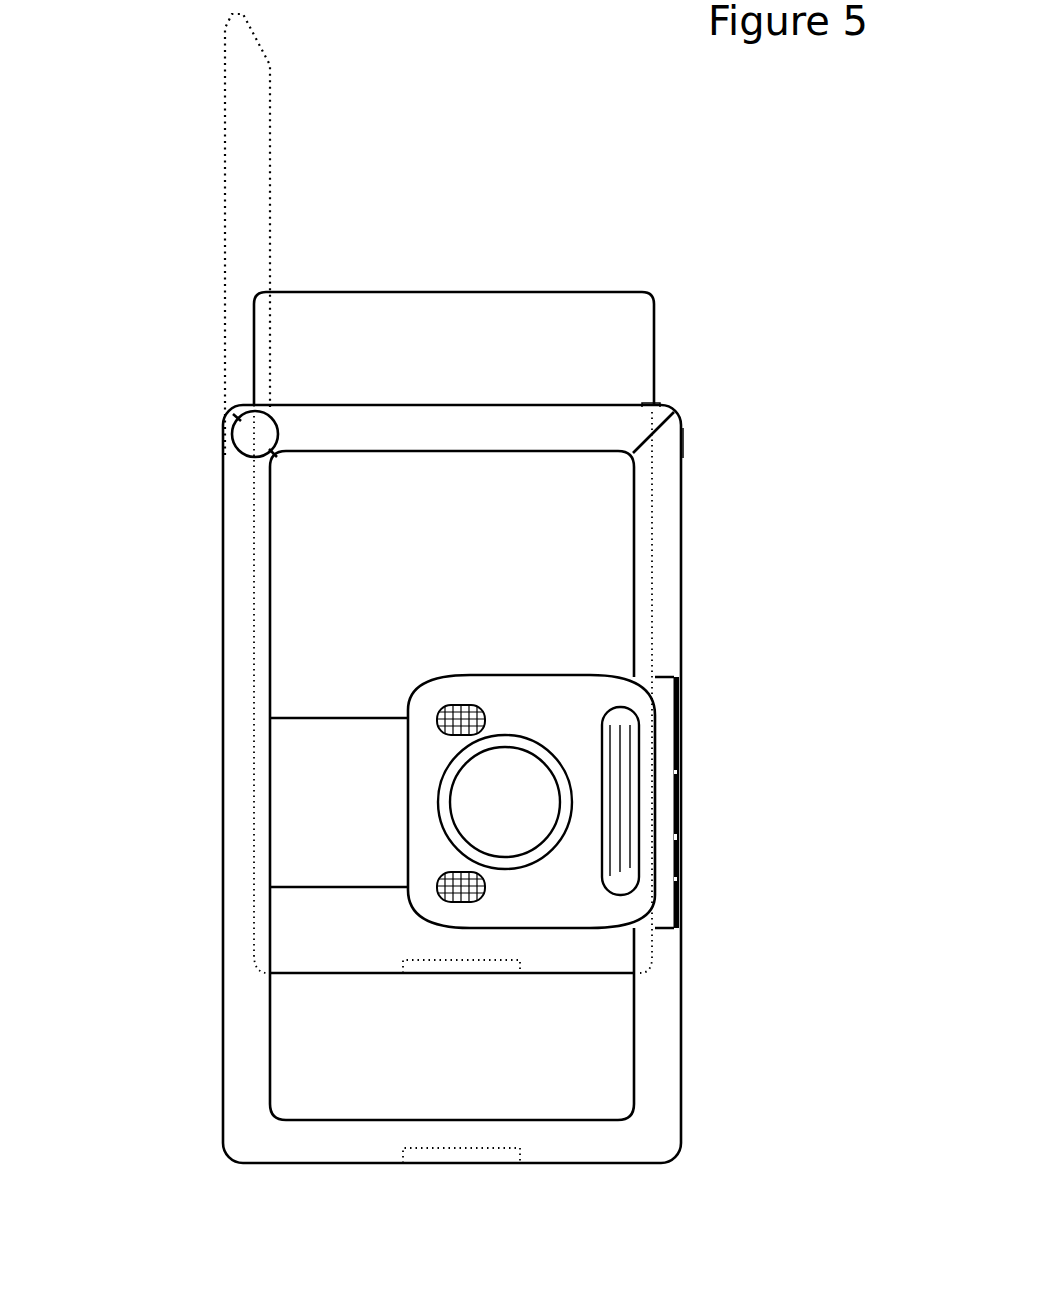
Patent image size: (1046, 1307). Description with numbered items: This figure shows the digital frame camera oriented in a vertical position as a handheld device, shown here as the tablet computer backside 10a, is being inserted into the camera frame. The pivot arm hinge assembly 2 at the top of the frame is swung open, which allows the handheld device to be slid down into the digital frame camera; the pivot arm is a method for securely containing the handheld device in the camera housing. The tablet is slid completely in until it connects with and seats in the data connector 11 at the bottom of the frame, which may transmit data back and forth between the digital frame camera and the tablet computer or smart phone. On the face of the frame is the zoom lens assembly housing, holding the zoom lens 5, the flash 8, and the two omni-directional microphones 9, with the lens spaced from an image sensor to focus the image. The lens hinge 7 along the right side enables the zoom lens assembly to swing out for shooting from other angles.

The pivot arm hinge assembly 2 is at (160, 235).
The Tablet Computer backside (Inserting into Camera Frame) 10a is at (541, 278).
The zoom lens 5 is at (681, 740).
The lens hinge 7 is at (703, 886).
The flash 8 is at (611, 887).
The omni-directional microphones 9 is at (442, 896).
The data connector 11 is at (430, 1129).